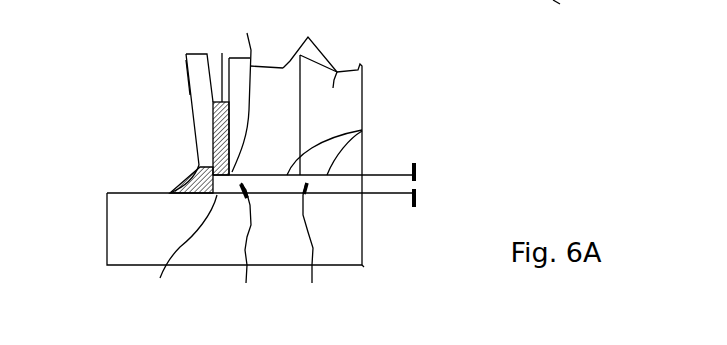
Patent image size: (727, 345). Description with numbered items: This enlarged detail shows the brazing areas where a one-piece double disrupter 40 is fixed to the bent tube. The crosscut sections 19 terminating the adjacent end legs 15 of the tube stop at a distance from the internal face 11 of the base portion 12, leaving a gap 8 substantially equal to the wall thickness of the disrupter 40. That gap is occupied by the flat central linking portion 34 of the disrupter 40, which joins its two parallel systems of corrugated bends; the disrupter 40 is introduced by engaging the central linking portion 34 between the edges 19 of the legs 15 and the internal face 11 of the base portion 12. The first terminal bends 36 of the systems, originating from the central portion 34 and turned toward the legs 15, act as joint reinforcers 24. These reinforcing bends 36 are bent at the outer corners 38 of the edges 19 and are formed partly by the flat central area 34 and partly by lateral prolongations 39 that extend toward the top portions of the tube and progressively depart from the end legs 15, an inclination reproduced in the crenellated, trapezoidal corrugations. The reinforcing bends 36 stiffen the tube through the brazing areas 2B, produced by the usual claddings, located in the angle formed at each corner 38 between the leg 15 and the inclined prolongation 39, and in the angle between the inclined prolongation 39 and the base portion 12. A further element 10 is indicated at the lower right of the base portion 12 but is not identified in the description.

The brazing areas 2B is at (216, 102).
The wall thickness 8 is at (324, 185).
The sensor device 10 is at (366, 266).
The internal face 11 is at (125, 193).
The base portion 12 is at (118, 230).
The end legs 15 is at (322, 139).
The crosscut sections 19 is at (362, 130).
The joint reinforcers 24 is at (268, 281).
The flat central linking portion 34 is at (332, 281).
The first terminal bends 36 is at (184, 281).
The outer corners 38 is at (276, 12).
The lateral prolongations 39 is at (188, 116).
The double disrupter 40 is at (186, 76).